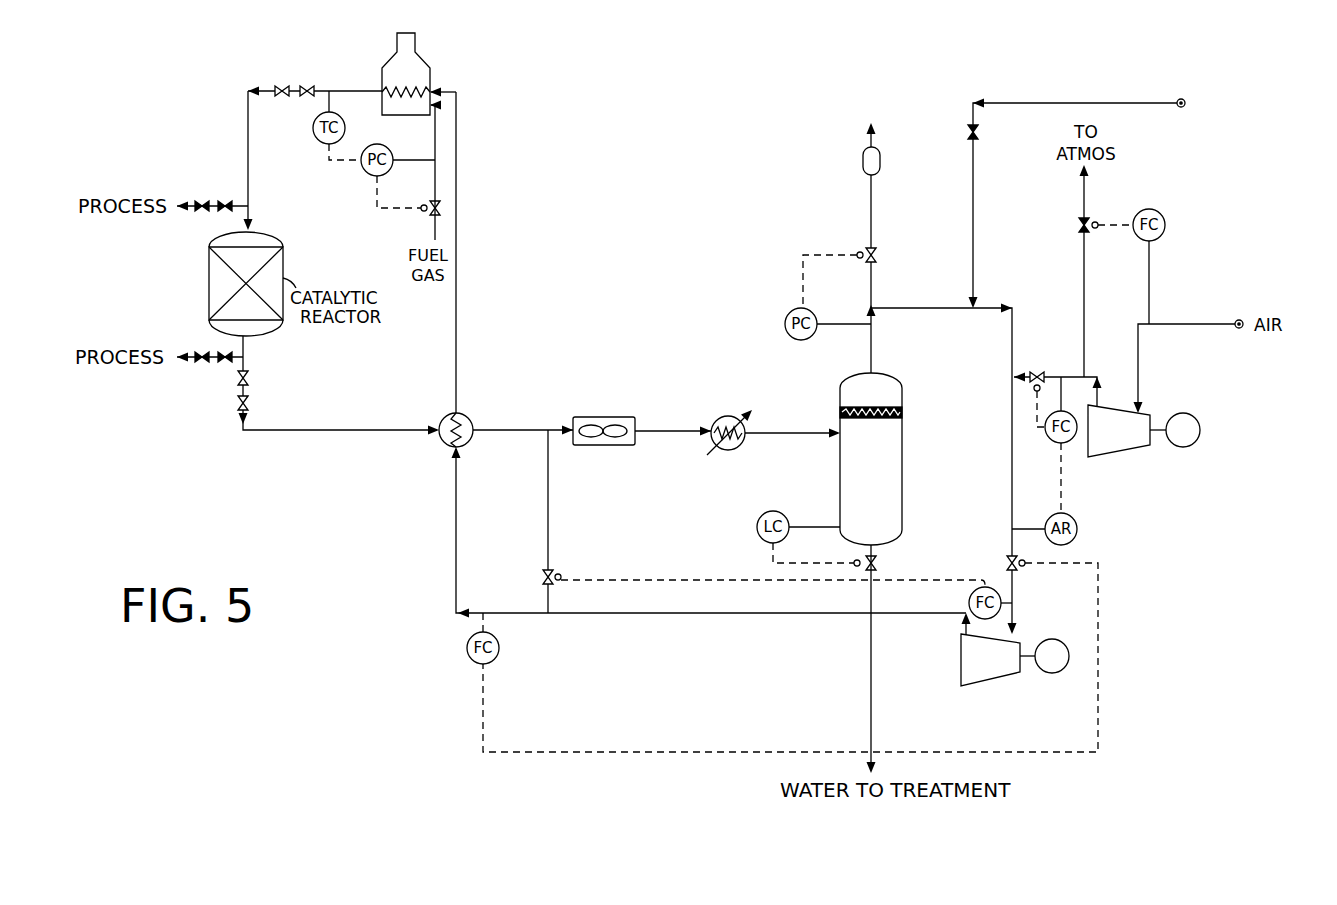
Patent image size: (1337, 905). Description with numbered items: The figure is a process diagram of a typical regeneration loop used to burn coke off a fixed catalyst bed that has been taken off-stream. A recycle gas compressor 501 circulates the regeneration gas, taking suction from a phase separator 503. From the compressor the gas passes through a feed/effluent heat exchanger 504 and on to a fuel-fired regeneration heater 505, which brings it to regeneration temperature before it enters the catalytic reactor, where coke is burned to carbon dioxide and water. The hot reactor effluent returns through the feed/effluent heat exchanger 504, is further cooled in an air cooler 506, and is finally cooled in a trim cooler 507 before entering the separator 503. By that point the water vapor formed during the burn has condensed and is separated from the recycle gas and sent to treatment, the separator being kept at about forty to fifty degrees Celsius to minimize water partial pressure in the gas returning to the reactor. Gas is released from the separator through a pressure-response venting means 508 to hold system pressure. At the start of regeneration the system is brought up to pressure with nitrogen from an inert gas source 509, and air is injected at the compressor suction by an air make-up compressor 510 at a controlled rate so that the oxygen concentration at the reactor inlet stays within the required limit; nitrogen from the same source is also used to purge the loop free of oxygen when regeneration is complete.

The recycle gas compressor 501 is at (988, 682).
The phase separator 503 is at (902, 472).
The feed/effluent heat exchanger 504 is at (460, 414).
The regeneration heater 505 is at (430, 77).
The air cooler 506 is at (614, 417).
The trim cooler 507 is at (729, 416).
The pressure-response venting means 508 is at (867, 251).
The inert gas source 509 is at (1082, 103).
The air make-up compressor 510 is at (1117, 456).